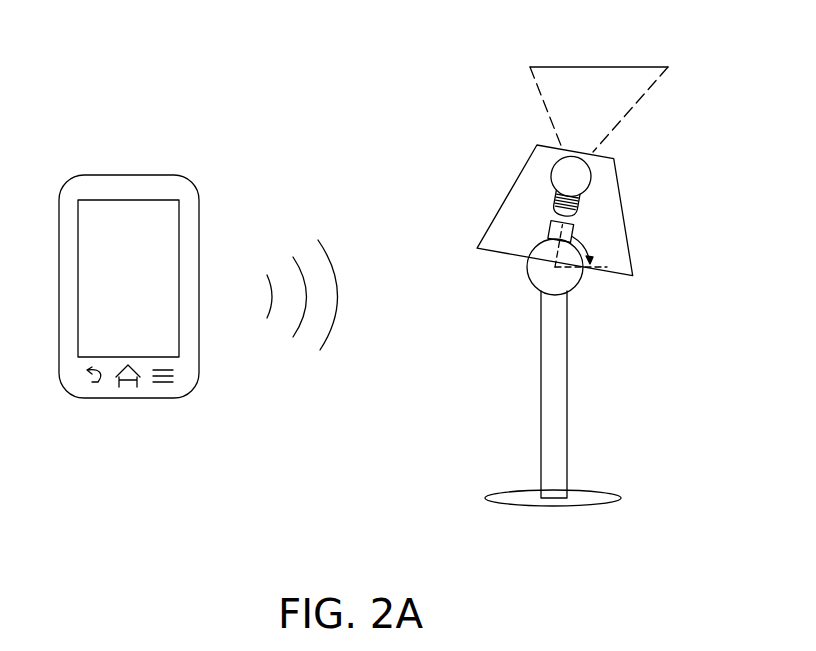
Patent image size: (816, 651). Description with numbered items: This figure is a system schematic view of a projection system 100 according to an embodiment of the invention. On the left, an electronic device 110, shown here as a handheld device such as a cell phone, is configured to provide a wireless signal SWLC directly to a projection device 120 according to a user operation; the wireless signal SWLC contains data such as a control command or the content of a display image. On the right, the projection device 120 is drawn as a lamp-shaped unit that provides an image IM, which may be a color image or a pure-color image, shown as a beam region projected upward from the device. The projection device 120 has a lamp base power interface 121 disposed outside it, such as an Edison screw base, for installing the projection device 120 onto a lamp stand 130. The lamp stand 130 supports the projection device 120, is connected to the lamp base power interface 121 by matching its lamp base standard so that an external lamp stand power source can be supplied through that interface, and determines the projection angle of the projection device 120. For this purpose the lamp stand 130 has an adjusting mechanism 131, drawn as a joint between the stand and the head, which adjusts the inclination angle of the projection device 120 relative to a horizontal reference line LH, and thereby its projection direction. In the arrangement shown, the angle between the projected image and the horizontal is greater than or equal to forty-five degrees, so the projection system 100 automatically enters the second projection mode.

The projection system 100 is at (85, 509).
The electronic device 110 is at (143, 175).
The projection device 120 is at (597, 177).
The lamp base power interface 121 is at (582, 203).
The lamp stand 130 is at (570, 339).
The adjusting mechanism 131 is at (568, 274).
The image IM is at (625, 67).
The horizontal reference line LH is at (607, 266).
The wireless signal SWLC is at (302, 314).